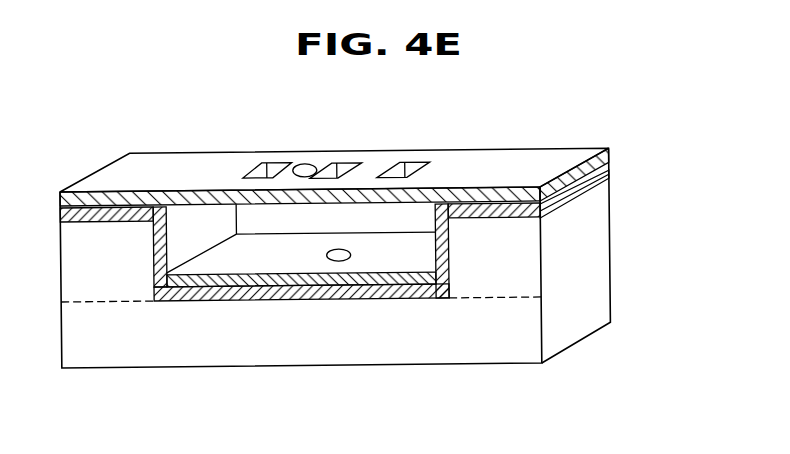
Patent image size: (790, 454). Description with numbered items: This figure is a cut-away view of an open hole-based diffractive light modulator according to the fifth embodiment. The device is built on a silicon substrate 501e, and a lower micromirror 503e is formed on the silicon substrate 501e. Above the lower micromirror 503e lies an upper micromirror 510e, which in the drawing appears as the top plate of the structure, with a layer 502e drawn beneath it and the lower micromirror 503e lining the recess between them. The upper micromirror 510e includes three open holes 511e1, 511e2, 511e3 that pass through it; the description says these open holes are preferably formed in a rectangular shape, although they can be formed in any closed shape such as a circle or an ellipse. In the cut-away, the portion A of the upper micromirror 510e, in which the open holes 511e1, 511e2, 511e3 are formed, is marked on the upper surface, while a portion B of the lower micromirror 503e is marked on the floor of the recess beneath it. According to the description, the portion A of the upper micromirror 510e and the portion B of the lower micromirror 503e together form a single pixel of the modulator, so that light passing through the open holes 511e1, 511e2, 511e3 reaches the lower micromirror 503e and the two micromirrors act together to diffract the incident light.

The silicon substrate 501e is at (606, 298).
The insulating layer 502e is at (609, 170).
The lower micromirror 503e is at (435, 282).
The upper micromirror 510e is at (609, 151).
The open hole 511e1 is at (265, 163).
The open hole 511e2 is at (349, 163).
The open hole 511e3 is at (412, 163).
The portion of the upper micromirror A is at (308, 164).
The portion of the lower micromirror B is at (334, 262).